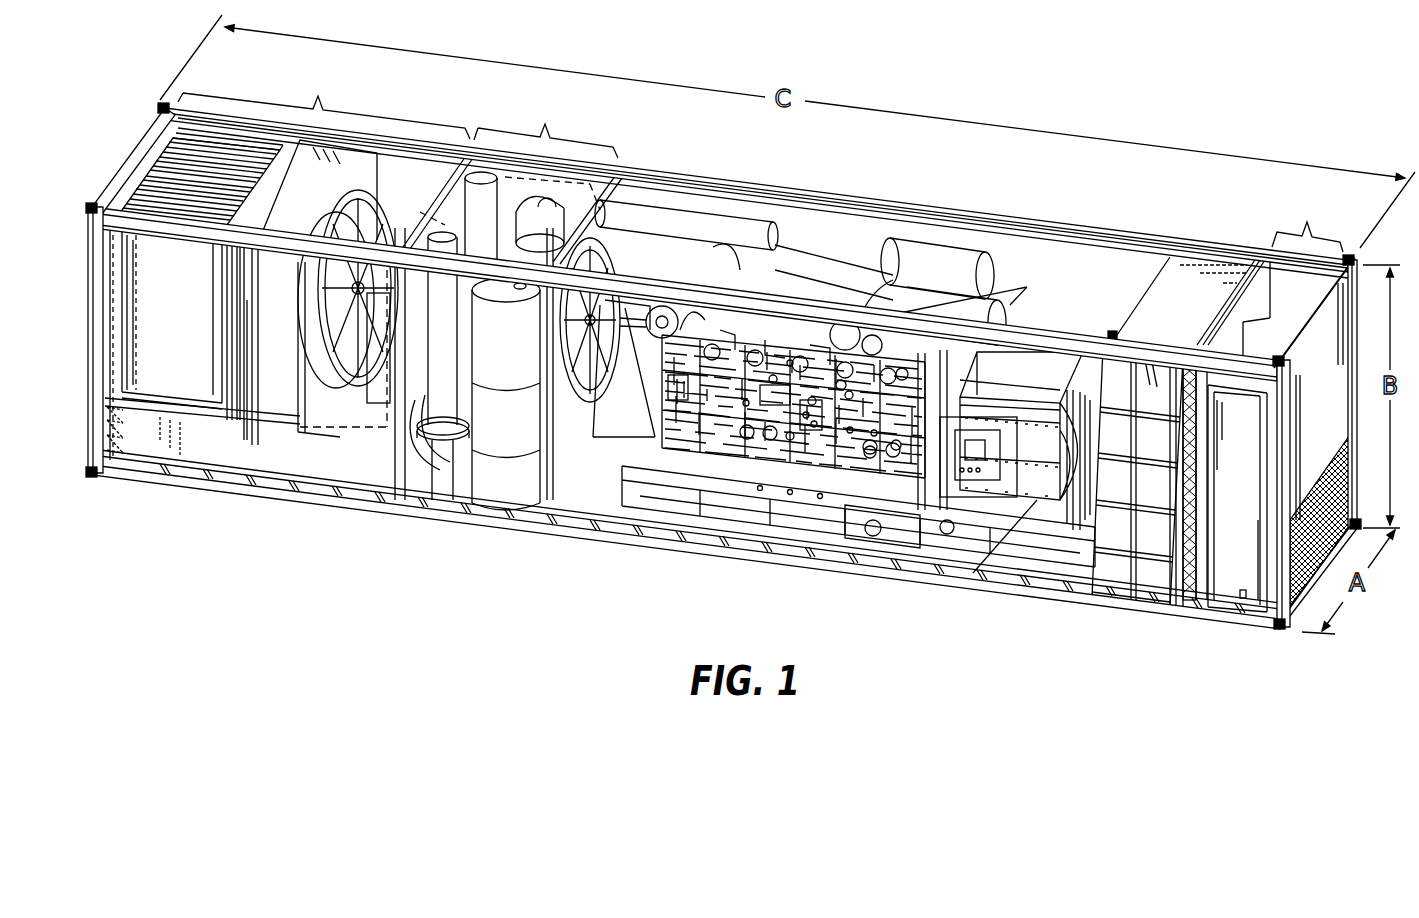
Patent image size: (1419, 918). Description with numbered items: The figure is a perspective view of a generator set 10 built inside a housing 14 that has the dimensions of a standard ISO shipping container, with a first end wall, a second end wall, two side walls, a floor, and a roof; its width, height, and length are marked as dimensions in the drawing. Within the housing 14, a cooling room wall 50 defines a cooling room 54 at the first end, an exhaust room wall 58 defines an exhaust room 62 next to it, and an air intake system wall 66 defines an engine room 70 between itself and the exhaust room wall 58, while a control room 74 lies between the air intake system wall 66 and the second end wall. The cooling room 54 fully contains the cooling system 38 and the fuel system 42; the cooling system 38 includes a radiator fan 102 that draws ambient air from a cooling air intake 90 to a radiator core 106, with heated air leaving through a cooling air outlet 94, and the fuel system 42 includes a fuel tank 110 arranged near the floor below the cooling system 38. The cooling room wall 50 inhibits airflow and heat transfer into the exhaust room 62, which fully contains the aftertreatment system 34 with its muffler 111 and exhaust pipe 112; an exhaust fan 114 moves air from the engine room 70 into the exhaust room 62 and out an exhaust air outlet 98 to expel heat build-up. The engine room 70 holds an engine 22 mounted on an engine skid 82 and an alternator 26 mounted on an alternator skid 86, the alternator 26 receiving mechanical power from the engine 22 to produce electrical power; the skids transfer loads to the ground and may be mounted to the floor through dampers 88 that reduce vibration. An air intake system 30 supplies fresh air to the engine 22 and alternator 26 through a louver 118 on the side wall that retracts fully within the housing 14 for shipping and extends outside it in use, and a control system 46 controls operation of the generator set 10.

The generator set 10 is at (316, 622).
The housing 14 is at (575, 533).
The engine 22 is at (833, 477).
The alternator 26 is at (1010, 520).
The air intake system 30 is at (1120, 580).
The aftertreatment system 34 is at (458, 482).
The cooling system 38 is at (186, 358).
The fuel system 42 is at (246, 442).
The control system 46 is at (1227, 578).
The cooling room wall 50 is at (394, 458).
The cooling room 54 is at (324, 100).
The exhaust room wall 58 is at (537, 480).
The exhaust room 62 is at (546, 126).
The air intake system wall 66 is at (1197, 530).
The engine room 70 is at (1266, 247).
The control room 74 is at (1307, 223).
The engine skid 82 is at (725, 505).
The alternator skid 86 is at (1037, 472).
The dampers 88 is at (873, 545).
The cooling air intake 90 is at (288, 377).
The cooling air outlet 94 is at (147, 165).
The exhaust air outlet 98 is at (465, 212).
The radiator fan 102 is at (316, 408).
The radiator core 106 is at (172, 327).
The fuel tank 110 is at (210, 432).
The muffler 111 is at (503, 490).
The exhaust pipe 112 is at (432, 398).
The exhaust fan 114 is at (618, 400).
The louver 118 is at (1153, 585).